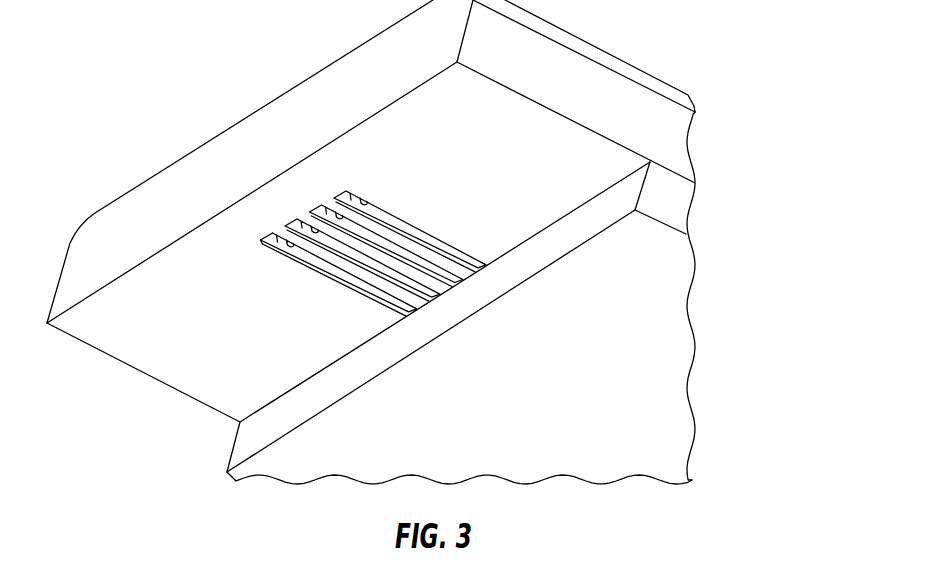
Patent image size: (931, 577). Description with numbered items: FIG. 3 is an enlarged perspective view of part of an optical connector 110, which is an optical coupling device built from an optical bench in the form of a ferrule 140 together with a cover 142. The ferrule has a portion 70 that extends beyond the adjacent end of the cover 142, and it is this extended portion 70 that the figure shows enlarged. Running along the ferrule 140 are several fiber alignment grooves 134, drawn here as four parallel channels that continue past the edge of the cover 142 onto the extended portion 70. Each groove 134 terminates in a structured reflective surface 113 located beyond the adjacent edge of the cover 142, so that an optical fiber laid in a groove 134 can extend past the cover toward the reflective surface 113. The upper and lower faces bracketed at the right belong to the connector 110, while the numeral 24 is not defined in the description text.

The extended portion 70 is at (517, 115).
The fiber alignment groove 134 is at (339, 197).
The ferrule 140 is at (677, 152).
The cover 142 is at (682, 205).
The optical connector 110 is at (775, 120).
The structured reflective surface 113 is at (268, 250).
The slot 24 is at (335, 283).